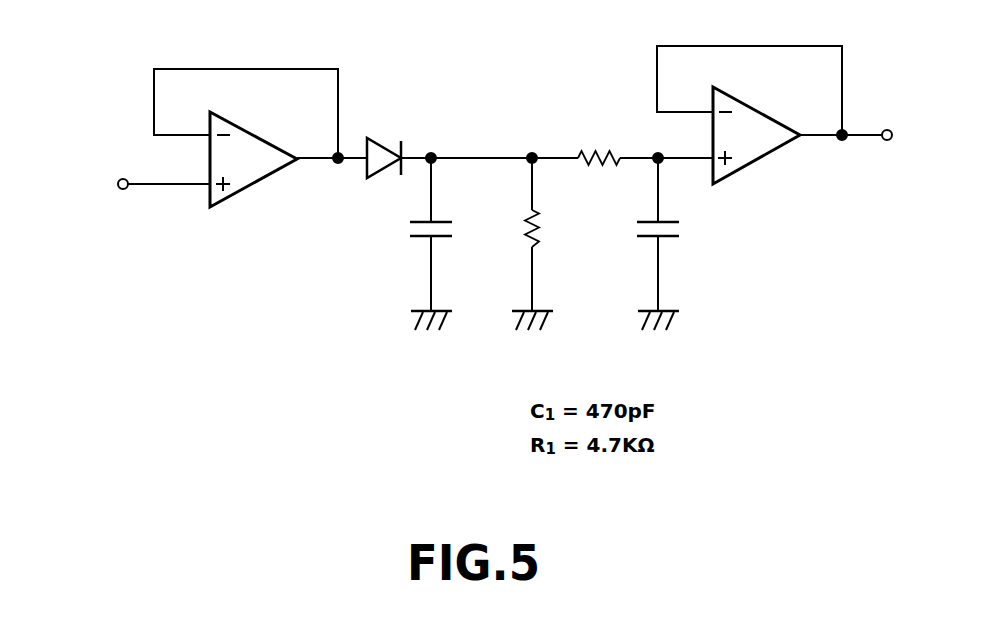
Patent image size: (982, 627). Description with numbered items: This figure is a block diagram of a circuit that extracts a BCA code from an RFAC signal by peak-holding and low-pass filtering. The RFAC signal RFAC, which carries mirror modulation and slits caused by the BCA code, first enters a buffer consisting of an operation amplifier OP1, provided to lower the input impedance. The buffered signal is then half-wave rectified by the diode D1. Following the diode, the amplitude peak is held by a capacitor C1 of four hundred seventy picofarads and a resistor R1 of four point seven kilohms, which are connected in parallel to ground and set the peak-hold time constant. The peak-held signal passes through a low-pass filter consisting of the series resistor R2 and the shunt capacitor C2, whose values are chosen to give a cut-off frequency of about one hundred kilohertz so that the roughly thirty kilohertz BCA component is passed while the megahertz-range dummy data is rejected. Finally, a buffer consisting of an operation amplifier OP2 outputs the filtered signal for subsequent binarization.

The RFAC signal RFAC is at (127, 185).
The operation amplifier OP1 is at (263, 182).
The diode D1 is at (399, 144).
The capacitor C1 is at (447, 244).
The resistor R1 is at (542, 244).
The resistor R2 is at (599, 144).
The capacitor C2 is at (673, 244).
The operation amplifier OP2 is at (748, 165).